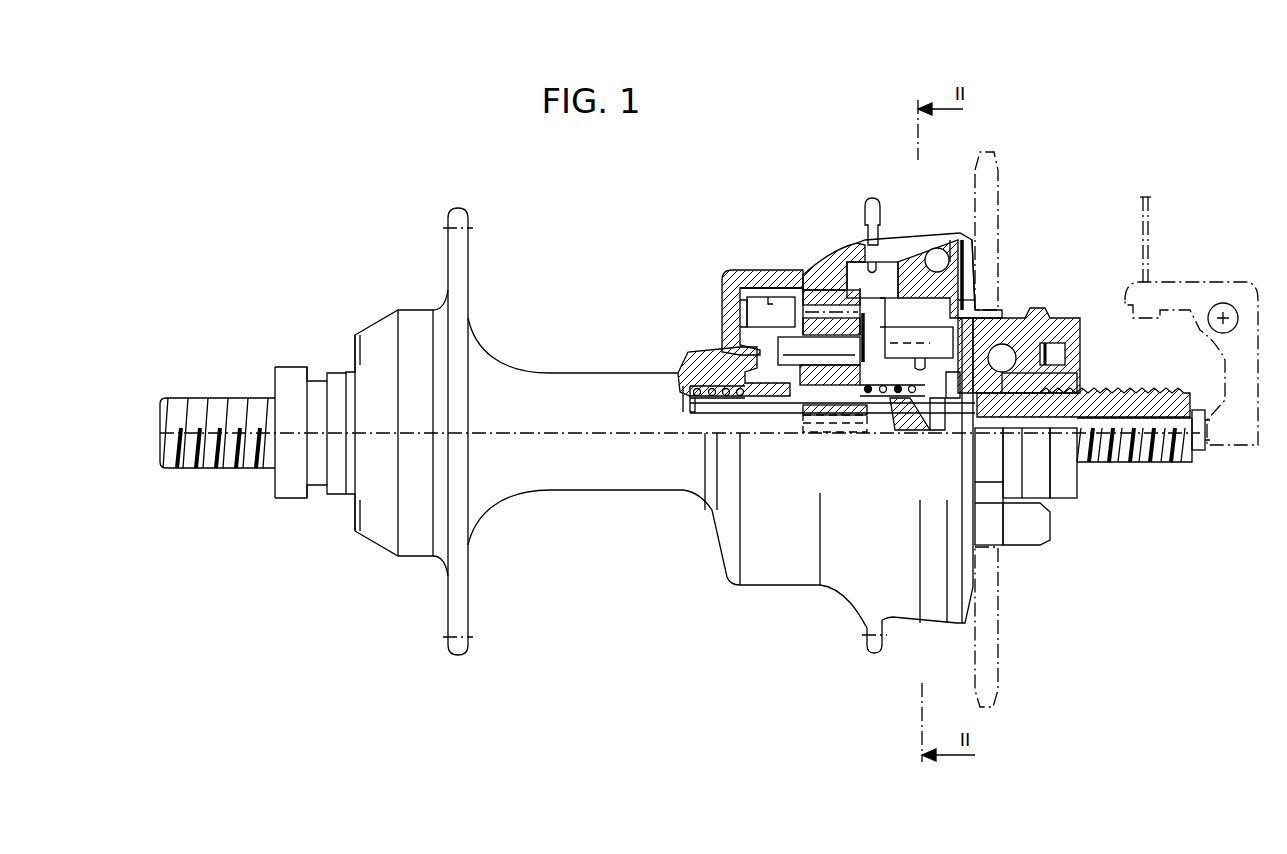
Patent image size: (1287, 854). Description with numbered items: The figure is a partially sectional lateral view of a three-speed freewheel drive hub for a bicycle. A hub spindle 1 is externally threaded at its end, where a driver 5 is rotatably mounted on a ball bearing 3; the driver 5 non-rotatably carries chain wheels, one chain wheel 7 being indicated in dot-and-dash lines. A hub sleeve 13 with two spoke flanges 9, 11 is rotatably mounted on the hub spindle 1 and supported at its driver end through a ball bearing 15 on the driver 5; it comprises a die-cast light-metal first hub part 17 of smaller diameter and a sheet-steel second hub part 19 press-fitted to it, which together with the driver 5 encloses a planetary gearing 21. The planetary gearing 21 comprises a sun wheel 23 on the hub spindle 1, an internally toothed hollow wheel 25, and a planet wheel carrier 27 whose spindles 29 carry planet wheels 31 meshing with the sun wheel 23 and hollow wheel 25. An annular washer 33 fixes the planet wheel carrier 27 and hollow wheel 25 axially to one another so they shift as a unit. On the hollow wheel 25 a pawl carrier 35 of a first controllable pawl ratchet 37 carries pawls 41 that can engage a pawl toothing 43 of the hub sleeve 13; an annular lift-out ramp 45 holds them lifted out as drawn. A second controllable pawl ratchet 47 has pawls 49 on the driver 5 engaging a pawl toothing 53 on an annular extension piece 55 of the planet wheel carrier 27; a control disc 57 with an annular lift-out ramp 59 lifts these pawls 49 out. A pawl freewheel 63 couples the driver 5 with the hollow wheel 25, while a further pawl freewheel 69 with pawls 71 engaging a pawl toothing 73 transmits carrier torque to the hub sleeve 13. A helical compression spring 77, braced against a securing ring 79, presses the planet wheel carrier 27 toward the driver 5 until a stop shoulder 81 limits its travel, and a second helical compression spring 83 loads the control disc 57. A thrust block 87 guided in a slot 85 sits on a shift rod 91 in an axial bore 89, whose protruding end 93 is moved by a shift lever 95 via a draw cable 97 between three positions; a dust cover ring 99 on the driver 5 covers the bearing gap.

The hub spindle 1 is at (214, 470).
The ball bearing 3 is at (1015, 355).
The driver 5 is at (962, 282).
The chain wheel 7 is at (998, 170).
The spoke flange 9 is at (871, 198).
The spoke flange 11 is at (462, 213).
The hub sleeve 13 is at (712, 262).
The ball bearing 15 is at (977, 256).
The first hub part 17 is at (562, 378).
The second hub part 19 is at (745, 275).
The planetary gearing 21 is at (810, 300).
The sun wheel 23 is at (830, 430).
The hollow wheel 25 is at (803, 298).
The planet wheel carrier 27 is at (775, 395).
The spindles 29 is at (735, 346).
The planet wheels 31 is at (818, 415).
The annular washer 33 is at (836, 282).
The pawl carrier 35 is at (965, 298).
The first controllable pawl ratchet 37 is at (905, 262).
The pawls 41 is at (855, 268).
The pawl toothing 43 is at (935, 248).
The annular lift-out ramp 45 is at (883, 255).
The second controllable pawl ratchet 47 is at (955, 398).
The pawls 49 is at (988, 358).
The pawl toothing 53 is at (868, 396).
The annular extension piece 55 is at (905, 396).
The control disc 57 is at (912, 428).
The annular lift-out ramp 59 is at (962, 438).
The pawl freewheel 63 is at (970, 310).
The further pawl freewheel 69 is at (738, 302).
The pawls 71 is at (745, 312).
The pawl toothing 73 is at (770, 290).
The helical compression spring 77 is at (690, 410).
The securing ring 79 is at (690, 392).
The stop shoulder 81 is at (790, 400).
The second helical compression spring 83 is at (876, 400).
The slot 85 is at (1077, 390).
The thrust block 87 is at (938, 418).
The axial bore 89 is at (1135, 395).
The shift rod 91 is at (1058, 462).
The end 93 is at (1198, 450).
The shift lever 95 is at (1225, 385).
The draw cable 97 is at (1150, 240).
The dust cover ring 99 is at (972, 262).